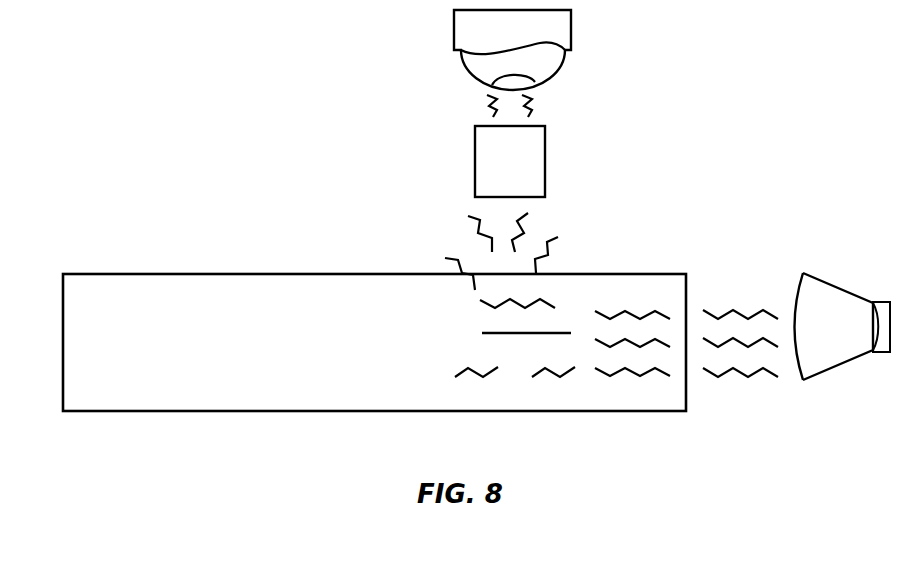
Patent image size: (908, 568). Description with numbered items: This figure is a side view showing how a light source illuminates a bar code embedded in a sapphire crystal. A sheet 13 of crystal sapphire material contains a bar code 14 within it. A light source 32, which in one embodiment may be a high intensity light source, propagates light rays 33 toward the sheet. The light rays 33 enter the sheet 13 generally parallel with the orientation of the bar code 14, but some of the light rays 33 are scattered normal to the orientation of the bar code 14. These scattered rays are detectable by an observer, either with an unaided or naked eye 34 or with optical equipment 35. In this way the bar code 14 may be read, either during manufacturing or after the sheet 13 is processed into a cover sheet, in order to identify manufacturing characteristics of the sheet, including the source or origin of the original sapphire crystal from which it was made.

The sheet 13 is at (83, 352).
The bar code 14 is at (518, 333).
The light source 32 is at (848, 288).
The light rays 33 is at (579, 224).
The unaided eye 34 is at (565, 67).
The optical equipment 35 is at (545, 162).